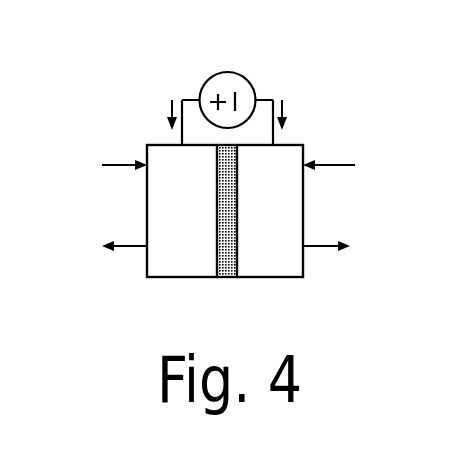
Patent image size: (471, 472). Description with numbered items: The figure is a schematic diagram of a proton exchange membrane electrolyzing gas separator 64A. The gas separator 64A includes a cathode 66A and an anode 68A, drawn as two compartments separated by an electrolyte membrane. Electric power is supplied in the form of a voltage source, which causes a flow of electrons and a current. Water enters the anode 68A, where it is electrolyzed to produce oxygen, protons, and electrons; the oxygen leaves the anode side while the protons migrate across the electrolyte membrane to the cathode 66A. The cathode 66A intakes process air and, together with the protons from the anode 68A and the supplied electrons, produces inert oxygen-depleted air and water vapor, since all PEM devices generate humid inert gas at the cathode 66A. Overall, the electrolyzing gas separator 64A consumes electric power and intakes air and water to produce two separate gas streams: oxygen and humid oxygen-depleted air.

The proton exchange membrane electrolyzing gas separator 64A is at (320, 88).
The anode 68A is at (182, 211).
The cathode 66A is at (270, 211).